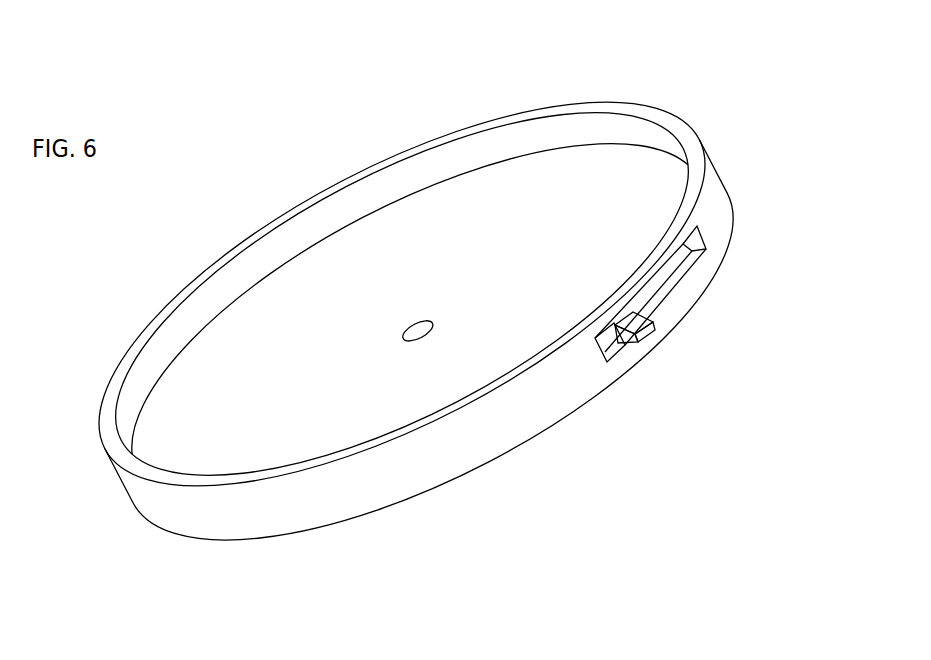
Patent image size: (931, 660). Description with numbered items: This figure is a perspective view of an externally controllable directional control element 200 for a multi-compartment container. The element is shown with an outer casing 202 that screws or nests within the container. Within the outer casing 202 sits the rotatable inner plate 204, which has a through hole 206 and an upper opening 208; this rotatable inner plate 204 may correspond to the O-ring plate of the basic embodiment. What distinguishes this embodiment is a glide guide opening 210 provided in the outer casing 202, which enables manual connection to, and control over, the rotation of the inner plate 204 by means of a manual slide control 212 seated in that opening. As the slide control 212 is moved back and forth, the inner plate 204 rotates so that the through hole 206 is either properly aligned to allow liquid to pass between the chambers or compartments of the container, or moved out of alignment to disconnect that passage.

The externally controllable directional control element 200 is at (752, 209).
The outer casing 202 is at (142, 529).
The rotatable inner plate 204 is at (559, 132).
The through hole 206 is at (437, 301).
The upper opening 208 is at (414, 276).
The glide guide opening 210 is at (693, 263).
The manual slide control 212 is at (651, 346).